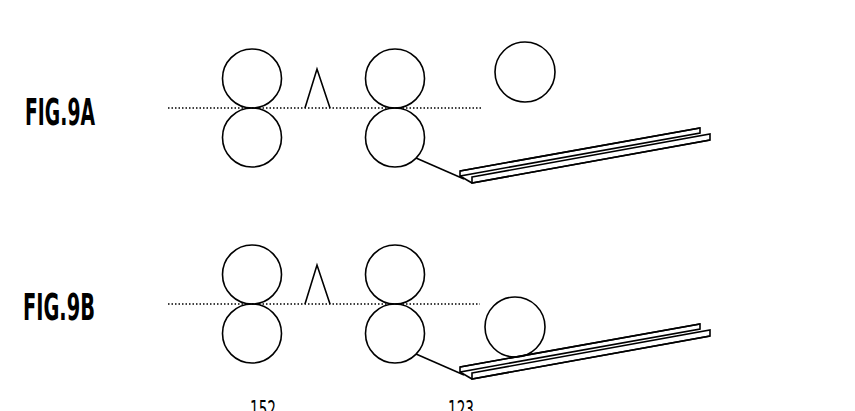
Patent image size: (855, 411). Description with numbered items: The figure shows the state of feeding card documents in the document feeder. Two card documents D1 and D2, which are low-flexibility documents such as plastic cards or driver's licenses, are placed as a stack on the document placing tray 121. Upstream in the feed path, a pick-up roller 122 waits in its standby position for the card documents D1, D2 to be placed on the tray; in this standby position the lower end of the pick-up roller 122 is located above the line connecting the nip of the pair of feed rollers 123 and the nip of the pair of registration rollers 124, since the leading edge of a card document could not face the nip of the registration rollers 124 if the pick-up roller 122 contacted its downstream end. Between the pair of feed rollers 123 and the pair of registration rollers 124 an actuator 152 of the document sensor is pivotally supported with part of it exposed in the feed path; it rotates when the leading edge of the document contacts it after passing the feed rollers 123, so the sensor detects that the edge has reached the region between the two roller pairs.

In FIG. 9A, the document placing tray 121 is at (583, 161).
In FIG. 9B, the document placing tray 121 is at (581, 359).
In FIG. 9A, the pick-up roller 122 is at (530, 57).
In FIG. 9B, the pick-up roller 122 is at (520, 312).
In FIG. 9A, the pair of feed rollers 123 is at (392, 53).
In FIG. 9B, the pair of feed rollers 123 is at (397, 267).
In FIG. 9A, the pair of registration rollers 124 is at (235, 72).
In FIG. 9B, the pair of registration rollers 124 is at (233, 268).
In FIG. 9A, the actuator 152 is at (317, 70).
In FIG. 9B, the actuator 152 is at (317, 266).
In FIG. 9A, the card document D1 is at (665, 133).
In FIG. 9B, the card document D1 is at (665, 329).
In FIG. 9A, the card document D2 is at (690, 142).
In FIG. 9B, the card document D2 is at (690, 338).